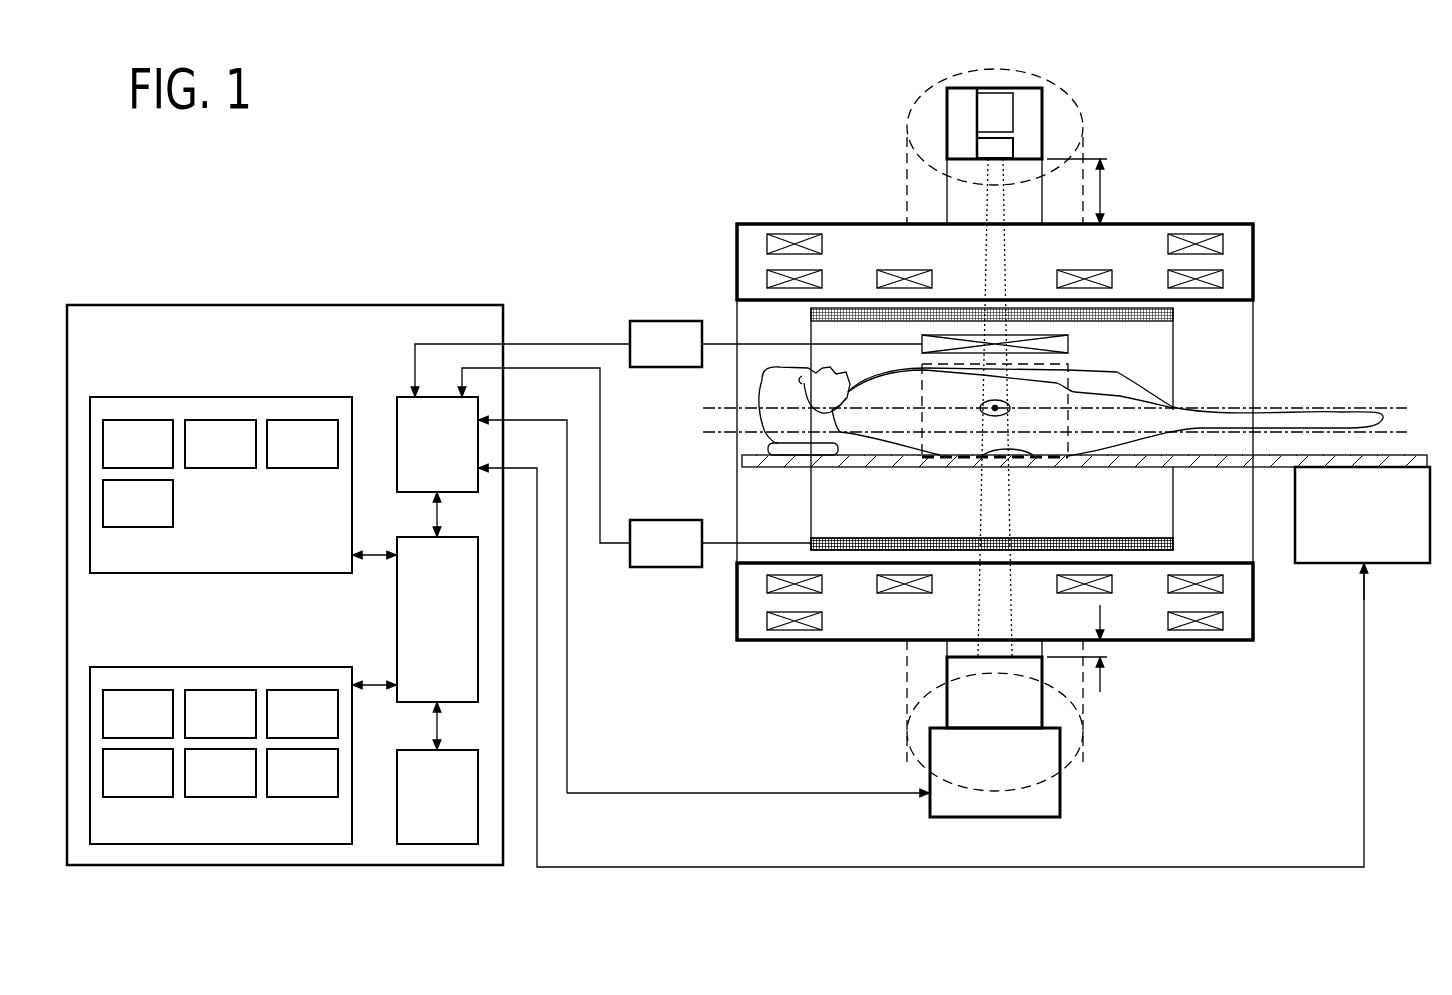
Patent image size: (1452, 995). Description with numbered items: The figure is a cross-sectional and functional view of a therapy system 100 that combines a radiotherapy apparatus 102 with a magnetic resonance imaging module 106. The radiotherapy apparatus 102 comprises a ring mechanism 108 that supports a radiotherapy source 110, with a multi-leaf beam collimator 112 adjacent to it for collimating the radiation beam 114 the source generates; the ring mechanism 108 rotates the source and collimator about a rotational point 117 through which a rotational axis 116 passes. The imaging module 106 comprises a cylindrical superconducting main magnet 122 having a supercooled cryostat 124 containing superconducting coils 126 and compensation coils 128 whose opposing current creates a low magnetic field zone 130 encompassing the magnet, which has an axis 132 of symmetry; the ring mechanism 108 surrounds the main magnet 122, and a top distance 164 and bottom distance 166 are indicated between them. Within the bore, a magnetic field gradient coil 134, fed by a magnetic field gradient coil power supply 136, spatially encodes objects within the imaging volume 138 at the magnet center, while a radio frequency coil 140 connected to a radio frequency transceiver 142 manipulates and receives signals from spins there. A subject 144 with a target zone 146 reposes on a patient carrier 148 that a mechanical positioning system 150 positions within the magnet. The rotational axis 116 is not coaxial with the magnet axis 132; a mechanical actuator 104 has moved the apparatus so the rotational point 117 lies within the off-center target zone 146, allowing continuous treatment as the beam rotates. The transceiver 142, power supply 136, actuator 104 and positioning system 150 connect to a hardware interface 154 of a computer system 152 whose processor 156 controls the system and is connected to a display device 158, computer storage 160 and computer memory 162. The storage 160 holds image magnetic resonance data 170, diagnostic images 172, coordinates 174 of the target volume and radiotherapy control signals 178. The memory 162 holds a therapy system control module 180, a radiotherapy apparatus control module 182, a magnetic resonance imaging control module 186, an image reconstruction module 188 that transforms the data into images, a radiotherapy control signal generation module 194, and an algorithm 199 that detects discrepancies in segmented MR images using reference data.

The therapy system 100 is at (488, 219).
The radiotherapy apparatus 102 is at (900, 108).
The mechanical actuator 104 is at (1060, 803).
The magnetic resonance imaging module 106 is at (1205, 334).
The ring mechanism 108 is at (1043, 110).
The radiotherapy source 110 is at (985, 110).
The multi-leaf beam collimator 112 is at (985, 147).
The radiation beam 114 is at (995, 259).
The rotational axis 116 is at (725, 408).
The rotational point 117 is at (995, 417).
The main magnet 122 is at (737, 262).
The cryostat 124 is at (1237, 252).
The superconducting coils 126 is at (877, 278).
The compensation coils 128 is at (785, 234).
The low magnetic field zone 130 is at (1040, 76).
The magnet axis 132 is at (725, 433).
The magnetic field gradient coil 134 is at (1165, 545).
The magnetic field gradient coil power supply 136 is at (688, 558).
The imaging volume 138 is at (1173, 388).
The radio frequency coil 140 is at (1068, 343).
The radio frequency transceiver 142 is at (688, 360).
The subject 144 is at (755, 418).
The target zone 146 is at (1010, 412).
The patient carrier 148 is at (753, 466).
The mechanical positioning system 150 is at (1386, 530).
The computer system 152 is at (247, 305).
The hardware interface 154 is at (459, 458).
The processor 156 is at (459, 636).
The display device 158 is at (459, 815).
The computer storage 160 is at (167, 397).
The computer memory 162 is at (167, 667).
The top distance 164 is at (1105, 165).
The bottom distance 166 is at (1107, 660).
The image magnetic resonance data 170 is at (161, 457).
The diagnostic images 172 is at (243, 457).
The coordinates of target volume 174 is at (325, 457).
The radiotherapy control signals 178 is at (161, 517).
The therapy system control module 180 is at (161, 727).
The radiotherapy apparatus control module 182 is at (243, 727).
The magnetic resonance imaging control module 186 is at (325, 727).
The image reconstruction module 188 is at (161, 786).
The radiotherapy control signal generation module 194 is at (243, 786).
The algorithm 199 is at (325, 786).